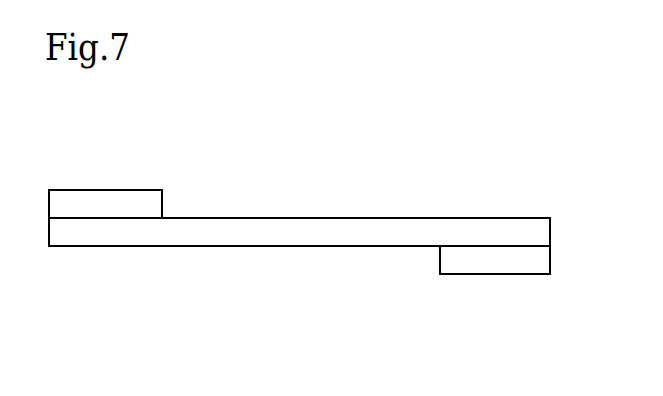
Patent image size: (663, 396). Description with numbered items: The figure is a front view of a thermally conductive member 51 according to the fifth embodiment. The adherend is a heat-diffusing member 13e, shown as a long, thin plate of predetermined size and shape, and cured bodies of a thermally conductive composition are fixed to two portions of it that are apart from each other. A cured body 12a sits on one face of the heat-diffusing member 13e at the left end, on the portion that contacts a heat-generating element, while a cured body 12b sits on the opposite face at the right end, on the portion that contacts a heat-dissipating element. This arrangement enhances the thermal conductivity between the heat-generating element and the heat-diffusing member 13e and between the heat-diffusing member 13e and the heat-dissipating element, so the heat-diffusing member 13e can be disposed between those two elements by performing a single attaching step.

The thermally conductive member 51 is at (460, 180).
The heat-diffusing member 13e is at (302, 218).
The cured body of the thermally conductive composition 12a is at (108, 190).
The cured body of the thermally conductive composition 12b is at (493, 275).